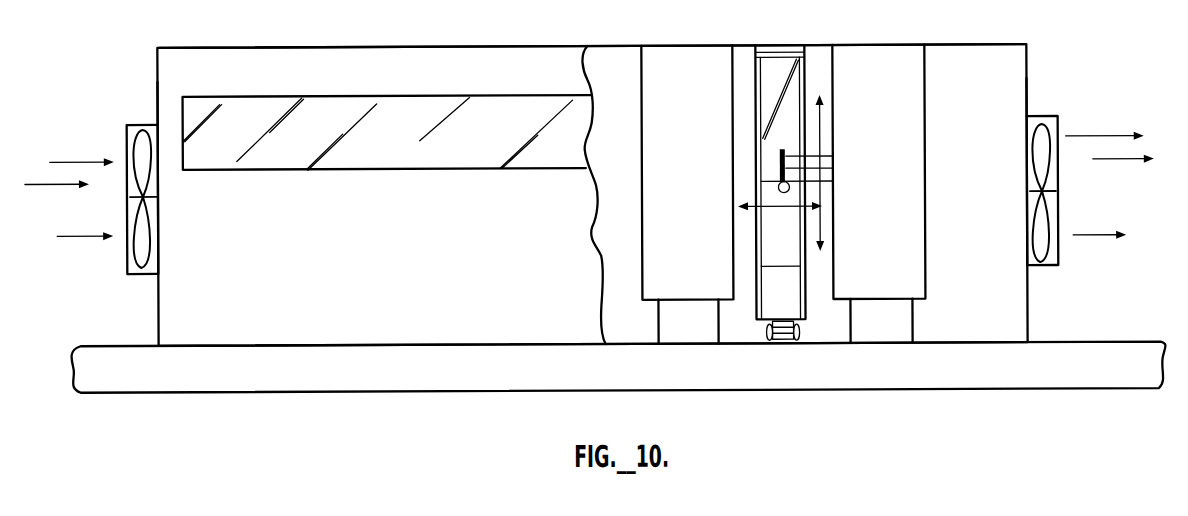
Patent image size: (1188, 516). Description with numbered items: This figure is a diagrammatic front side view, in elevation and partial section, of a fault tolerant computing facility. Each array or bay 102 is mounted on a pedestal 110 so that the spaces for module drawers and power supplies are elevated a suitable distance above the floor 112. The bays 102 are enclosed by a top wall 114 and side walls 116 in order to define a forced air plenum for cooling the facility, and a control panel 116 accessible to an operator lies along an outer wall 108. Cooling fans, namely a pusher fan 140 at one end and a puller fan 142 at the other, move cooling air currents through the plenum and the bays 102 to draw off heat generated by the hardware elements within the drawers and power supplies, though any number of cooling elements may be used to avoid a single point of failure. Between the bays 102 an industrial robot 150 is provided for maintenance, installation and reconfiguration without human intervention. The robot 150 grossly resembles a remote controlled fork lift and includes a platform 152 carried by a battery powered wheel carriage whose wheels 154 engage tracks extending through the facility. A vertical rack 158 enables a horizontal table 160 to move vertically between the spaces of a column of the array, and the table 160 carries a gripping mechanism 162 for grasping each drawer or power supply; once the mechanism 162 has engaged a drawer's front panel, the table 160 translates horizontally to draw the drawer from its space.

The bay 102 is at (701, 168).
The outer wall 108 is at (370, 285).
The pedestal 110 is at (699, 335).
The floor 112 is at (1090, 343).
The top wall 114 is at (612, 46).
The side wall 116 is at (158, 80).
The pusher fan 140 is at (140, 256).
The puller fan 142 is at (1045, 128).
The industrial robot 150 is at (808, 299).
The platform 152 is at (771, 322).
The wheels 154 is at (766, 333).
The vertical rack 158 is at (762, 82).
The horizontal table 160 is at (777, 182).
The gripping mechanism 162 is at (785, 150).